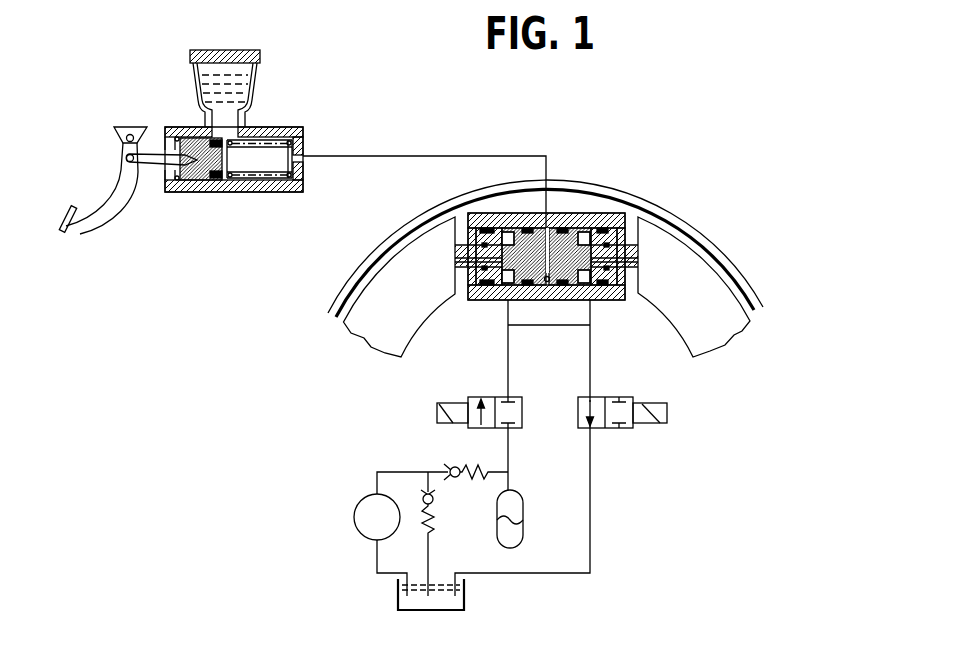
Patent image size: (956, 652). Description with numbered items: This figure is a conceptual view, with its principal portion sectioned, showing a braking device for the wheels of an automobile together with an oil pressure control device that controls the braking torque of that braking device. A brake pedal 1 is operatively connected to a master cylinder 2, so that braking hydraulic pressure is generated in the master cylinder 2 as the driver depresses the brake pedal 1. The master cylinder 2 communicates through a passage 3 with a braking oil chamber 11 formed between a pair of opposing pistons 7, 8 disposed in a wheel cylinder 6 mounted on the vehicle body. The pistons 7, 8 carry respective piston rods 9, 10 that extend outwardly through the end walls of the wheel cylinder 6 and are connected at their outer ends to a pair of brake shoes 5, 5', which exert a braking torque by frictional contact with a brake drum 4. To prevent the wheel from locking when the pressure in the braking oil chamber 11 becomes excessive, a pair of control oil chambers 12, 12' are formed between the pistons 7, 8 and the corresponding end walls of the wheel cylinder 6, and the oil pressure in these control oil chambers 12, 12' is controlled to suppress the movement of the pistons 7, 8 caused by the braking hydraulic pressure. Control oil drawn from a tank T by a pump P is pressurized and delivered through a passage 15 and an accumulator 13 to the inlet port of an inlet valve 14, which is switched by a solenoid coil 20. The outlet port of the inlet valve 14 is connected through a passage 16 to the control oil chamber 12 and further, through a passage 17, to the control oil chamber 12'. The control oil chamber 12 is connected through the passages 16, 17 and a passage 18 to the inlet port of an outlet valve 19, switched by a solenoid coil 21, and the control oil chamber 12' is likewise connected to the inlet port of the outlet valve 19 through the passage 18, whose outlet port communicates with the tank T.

The brake pedal 1 is at (70, 213).
The master cylinder 2 is at (285, 127).
The passage 3 is at (408, 156).
The brake drum 4 is at (422, 217).
The brake shoe 5 is at (400, 287).
The brake shoe 5' is at (694, 287).
The wheel cylinder 6 is at (603, 201).
The piston 7 is at (538, 266).
The piston 8 is at (568, 268).
The piston rod 9 is at (463, 258).
The piston rod 10 is at (632, 262).
The braking oil chamber 11 is at (549, 283).
The control oil chamber 12 is at (501, 219).
The control oil chamber 12' is at (578, 219).
The accumulator 13 is at (524, 502).
The inlet valve 14 is at (475, 397).
The passage 15 is at (397, 472).
The passage 16 is at (506, 347).
The passage 17 is at (539, 326).
The passage 18 is at (592, 350).
The outlet valve 19 is at (629, 397).
The solenoid coil 20 is at (440, 404).
The solenoid coil 21 is at (660, 404).
The pump P is at (354, 517).
The tank T is at (466, 592).